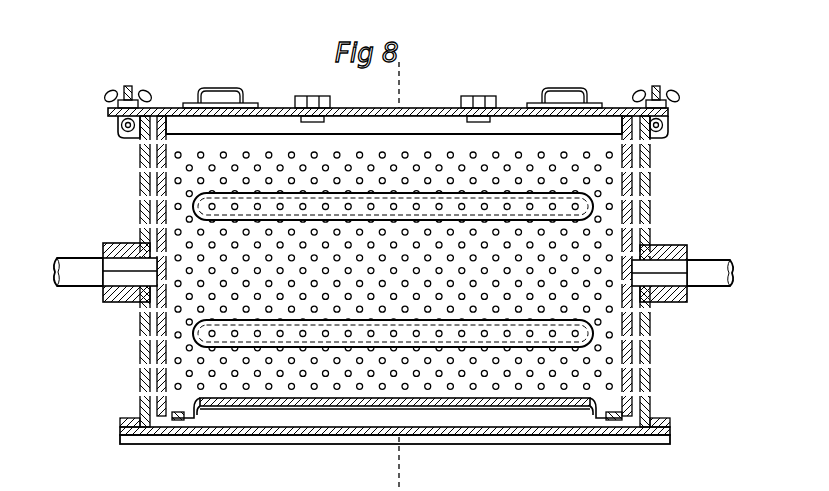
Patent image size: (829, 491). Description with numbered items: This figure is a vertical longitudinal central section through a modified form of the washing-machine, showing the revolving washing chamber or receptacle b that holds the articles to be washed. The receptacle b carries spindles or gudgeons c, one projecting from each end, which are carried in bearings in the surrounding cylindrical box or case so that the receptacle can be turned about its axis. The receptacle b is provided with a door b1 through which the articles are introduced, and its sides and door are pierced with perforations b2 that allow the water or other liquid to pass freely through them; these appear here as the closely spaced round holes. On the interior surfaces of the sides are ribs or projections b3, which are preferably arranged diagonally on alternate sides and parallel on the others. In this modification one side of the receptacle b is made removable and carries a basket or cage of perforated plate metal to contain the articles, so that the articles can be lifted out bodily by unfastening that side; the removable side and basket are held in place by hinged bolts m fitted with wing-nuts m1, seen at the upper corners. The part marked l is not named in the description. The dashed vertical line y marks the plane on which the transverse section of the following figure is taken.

The washing chamber or receptacle b is at (395, 446).
The door b1 is at (401, 108).
The perforations b2 is at (319, 169).
The ribs or projections b3 is at (313, 399).
The spindles or gudgeons c is at (393, 272).
The inner wall lining l is at (166, 190).
The hinged bolts m is at (119, 118).
The wing-nuts m1 is at (142, 92).
The section line y is at (406, 276).